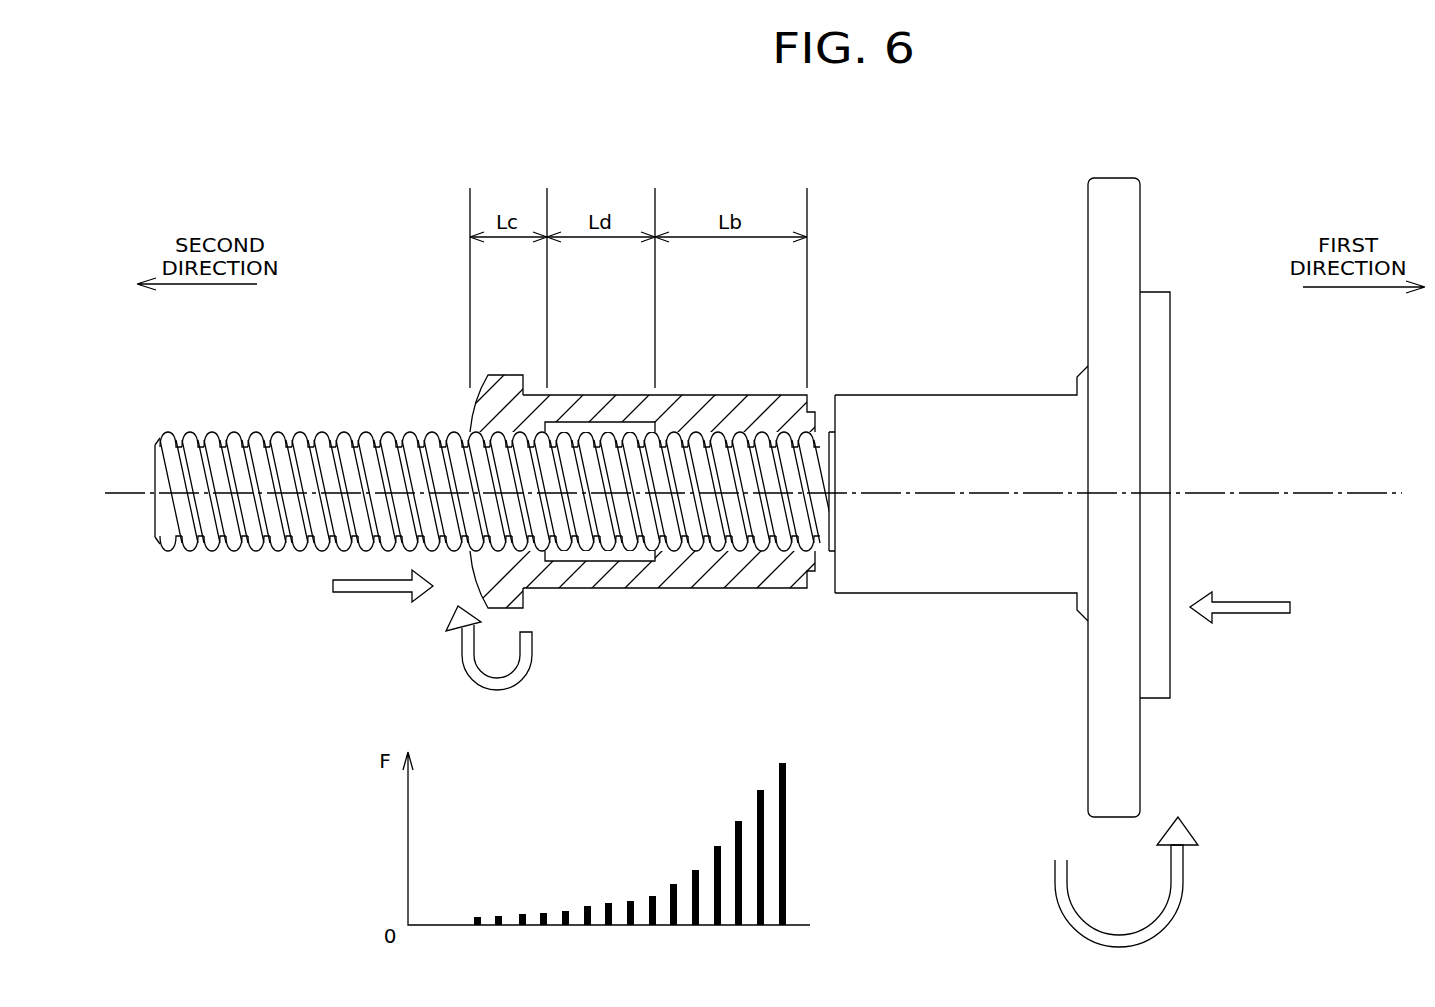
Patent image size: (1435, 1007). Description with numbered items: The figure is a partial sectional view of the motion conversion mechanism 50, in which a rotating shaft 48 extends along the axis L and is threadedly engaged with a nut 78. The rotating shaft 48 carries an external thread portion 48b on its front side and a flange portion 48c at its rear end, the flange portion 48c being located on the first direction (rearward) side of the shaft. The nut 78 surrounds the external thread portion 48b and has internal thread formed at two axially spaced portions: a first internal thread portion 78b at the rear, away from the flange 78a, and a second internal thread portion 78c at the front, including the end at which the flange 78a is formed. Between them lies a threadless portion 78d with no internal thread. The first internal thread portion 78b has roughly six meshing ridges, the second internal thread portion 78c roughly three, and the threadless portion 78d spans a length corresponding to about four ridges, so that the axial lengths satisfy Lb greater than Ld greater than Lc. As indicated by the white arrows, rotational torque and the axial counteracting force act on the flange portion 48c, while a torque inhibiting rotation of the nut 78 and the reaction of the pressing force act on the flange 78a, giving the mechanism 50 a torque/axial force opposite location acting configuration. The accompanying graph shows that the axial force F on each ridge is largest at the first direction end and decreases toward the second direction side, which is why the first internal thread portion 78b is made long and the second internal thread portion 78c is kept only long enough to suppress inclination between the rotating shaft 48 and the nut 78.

The rotating shaft 48 is at (969, 316).
The external thread portion 48b is at (253, 432).
The flange portion 48c is at (1130, 212).
The motion conversion mechanism 50 is at (493, 161).
The nut 78 is at (429, 363).
The flange 78a is at (480, 388).
The first internal thread portion 78b is at (725, 414).
The second internal thread portion 78c is at (513, 416).
The threadless portion 78d is at (595, 412).
The axis L is at (1325, 493).